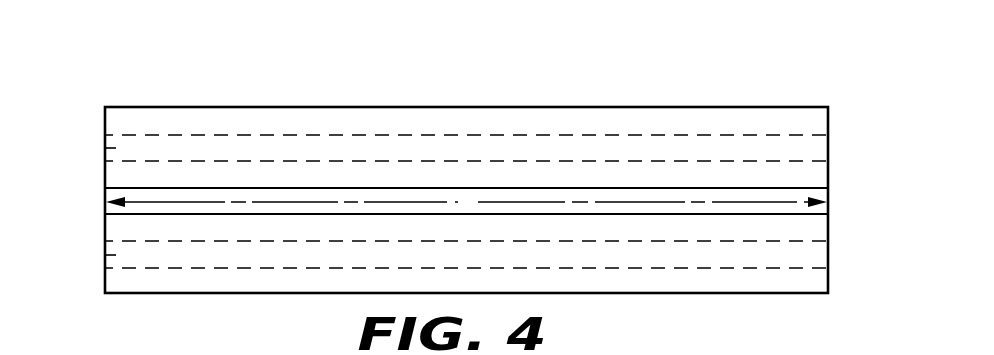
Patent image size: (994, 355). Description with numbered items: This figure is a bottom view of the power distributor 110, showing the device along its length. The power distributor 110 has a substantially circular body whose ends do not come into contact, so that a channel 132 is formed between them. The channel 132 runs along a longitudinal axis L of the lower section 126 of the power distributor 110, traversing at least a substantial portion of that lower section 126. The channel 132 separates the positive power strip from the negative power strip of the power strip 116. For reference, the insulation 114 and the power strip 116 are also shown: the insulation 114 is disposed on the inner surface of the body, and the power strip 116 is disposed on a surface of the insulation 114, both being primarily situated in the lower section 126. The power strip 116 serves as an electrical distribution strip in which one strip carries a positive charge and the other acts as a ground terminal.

The power distributor 110 is at (264, 79).
The insulation 114 is at (105, 148).
The power strip 116 is at (130, 230).
The lower section 126 is at (168, 122).
The channel 132 is at (542, 195).